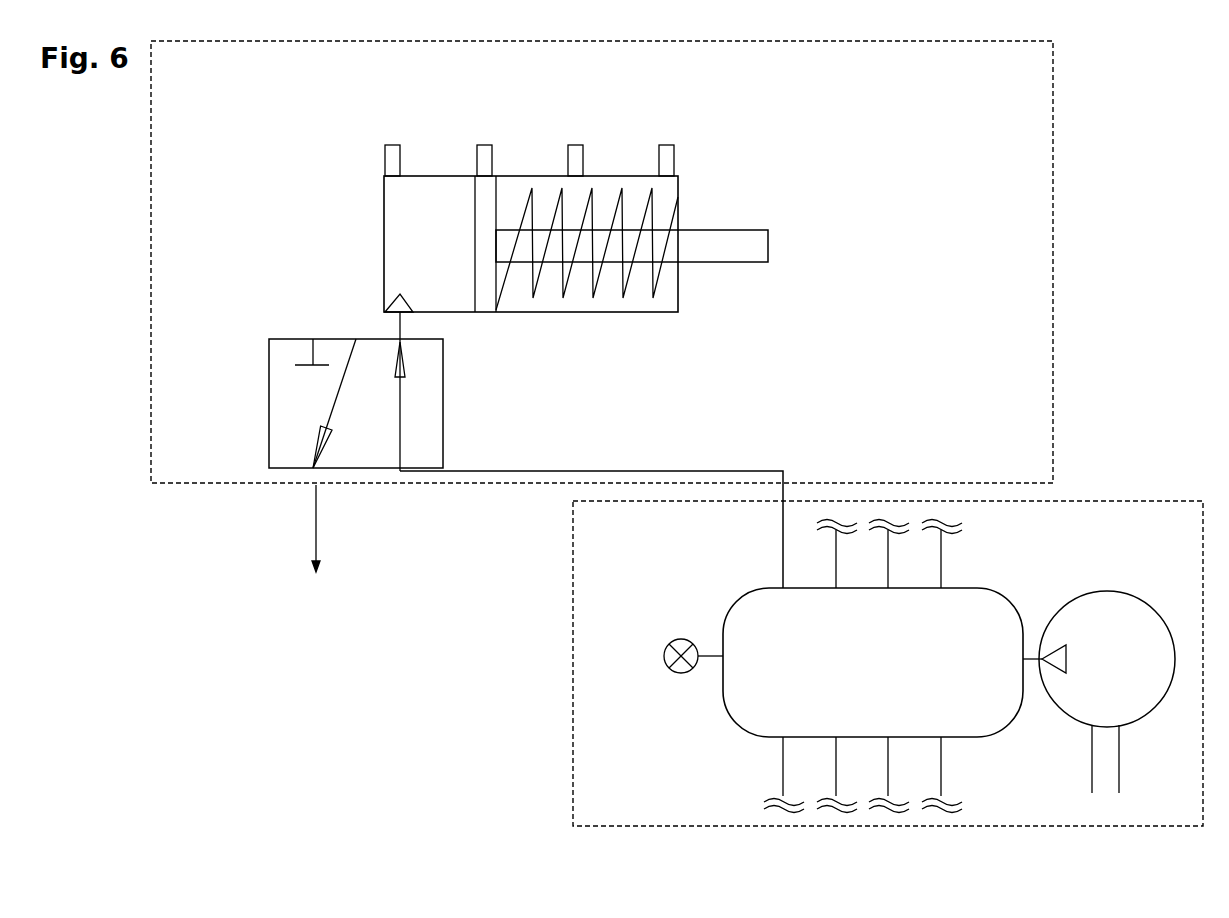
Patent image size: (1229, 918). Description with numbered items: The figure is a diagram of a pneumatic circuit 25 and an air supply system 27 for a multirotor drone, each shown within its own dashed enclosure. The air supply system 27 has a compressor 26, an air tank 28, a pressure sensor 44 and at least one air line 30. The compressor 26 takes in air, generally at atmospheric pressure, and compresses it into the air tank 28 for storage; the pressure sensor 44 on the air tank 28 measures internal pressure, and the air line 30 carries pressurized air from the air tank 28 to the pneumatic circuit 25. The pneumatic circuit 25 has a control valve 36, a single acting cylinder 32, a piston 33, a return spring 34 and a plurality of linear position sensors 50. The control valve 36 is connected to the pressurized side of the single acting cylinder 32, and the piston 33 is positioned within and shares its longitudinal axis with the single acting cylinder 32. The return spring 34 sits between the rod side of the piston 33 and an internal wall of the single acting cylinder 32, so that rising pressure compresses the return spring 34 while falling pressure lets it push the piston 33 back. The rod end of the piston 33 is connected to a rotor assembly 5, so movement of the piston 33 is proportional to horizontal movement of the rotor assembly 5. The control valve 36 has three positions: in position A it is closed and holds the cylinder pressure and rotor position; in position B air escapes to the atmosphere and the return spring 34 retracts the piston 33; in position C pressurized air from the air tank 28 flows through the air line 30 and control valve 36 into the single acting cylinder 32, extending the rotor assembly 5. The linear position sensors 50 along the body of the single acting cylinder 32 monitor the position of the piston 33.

The rotor assembly 5 is at (782, 247).
The pneumatic circuit 25 is at (1085, 170).
The compressor 26 is at (1070, 717).
The air supply system 27 is at (557, 726).
The air tank 28 is at (997, 590).
The air line 30 is at (783, 547).
The single acting cylinder 32 is at (384, 220).
The piston 33 is at (722, 230).
The return spring 34 is at (660, 270).
The control valve 36 is at (269, 404).
The pressure sensor 44 is at (663, 651).
The linear position sensor 50 is at (392, 145).